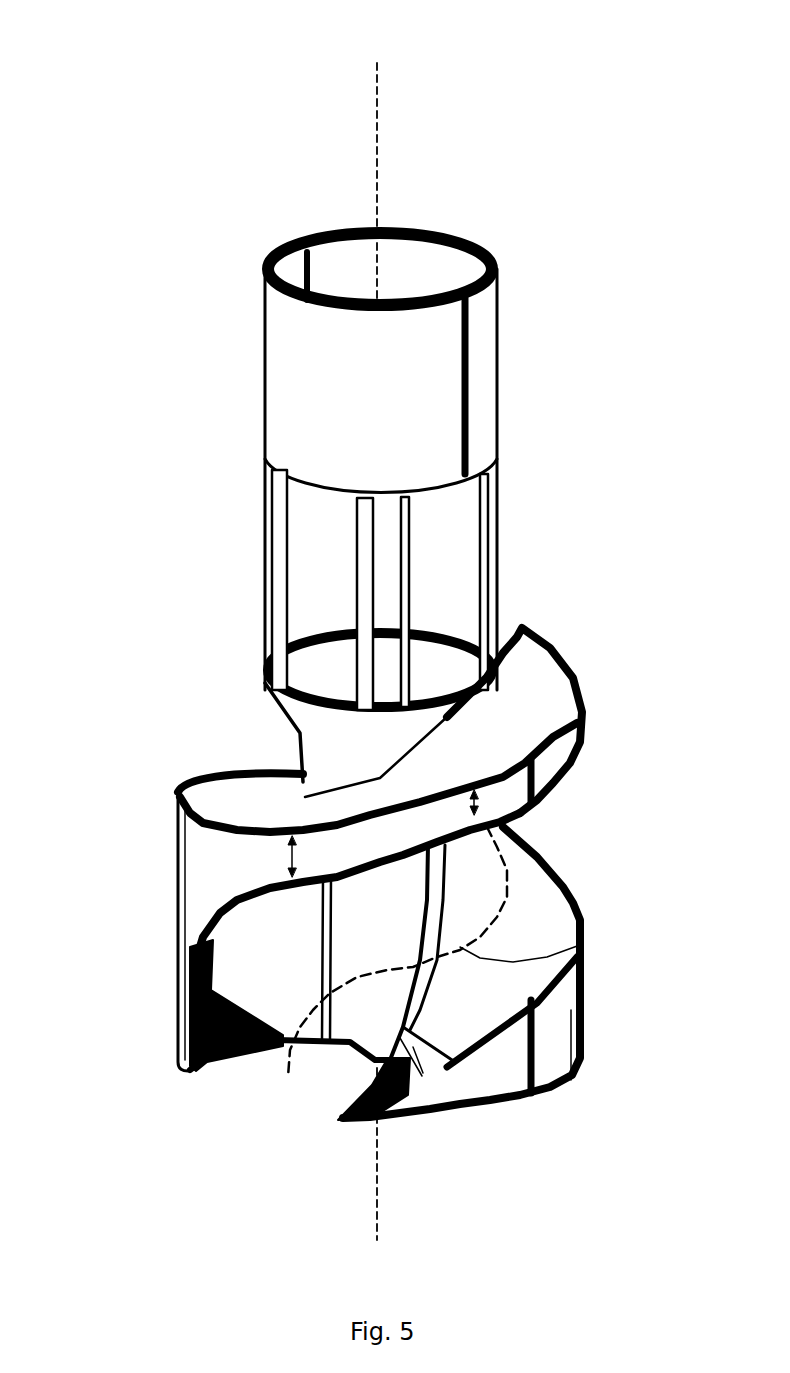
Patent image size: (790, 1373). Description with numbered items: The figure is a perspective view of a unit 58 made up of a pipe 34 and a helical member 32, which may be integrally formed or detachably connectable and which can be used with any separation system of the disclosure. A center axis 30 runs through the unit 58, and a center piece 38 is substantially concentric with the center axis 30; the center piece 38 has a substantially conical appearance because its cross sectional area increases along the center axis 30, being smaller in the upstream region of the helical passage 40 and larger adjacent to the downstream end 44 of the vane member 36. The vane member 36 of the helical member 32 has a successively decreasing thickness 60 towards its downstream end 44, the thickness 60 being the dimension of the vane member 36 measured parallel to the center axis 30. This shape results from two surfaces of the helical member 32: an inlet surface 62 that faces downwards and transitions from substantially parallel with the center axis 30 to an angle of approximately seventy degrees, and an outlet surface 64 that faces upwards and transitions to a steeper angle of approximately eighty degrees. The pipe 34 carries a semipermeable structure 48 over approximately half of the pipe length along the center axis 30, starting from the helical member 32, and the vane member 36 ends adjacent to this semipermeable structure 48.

The center axis 30 is at (379, 129).
The helical member 32 is at (335, 890).
The pipe 34 is at (267, 471).
The vane member 36 is at (550, 757).
The center piece 38 is at (320, 738).
The helical passage 40 is at (580, 957).
The downstream end 44 is at (513, 653).
The semipermeable structure 48 is at (330, 592).
The unit 58 is at (335, 620).
The thickness 60 is at (478, 802).
The inlet surface 62 is at (527, 812).
The outlet surface 64 is at (530, 912).